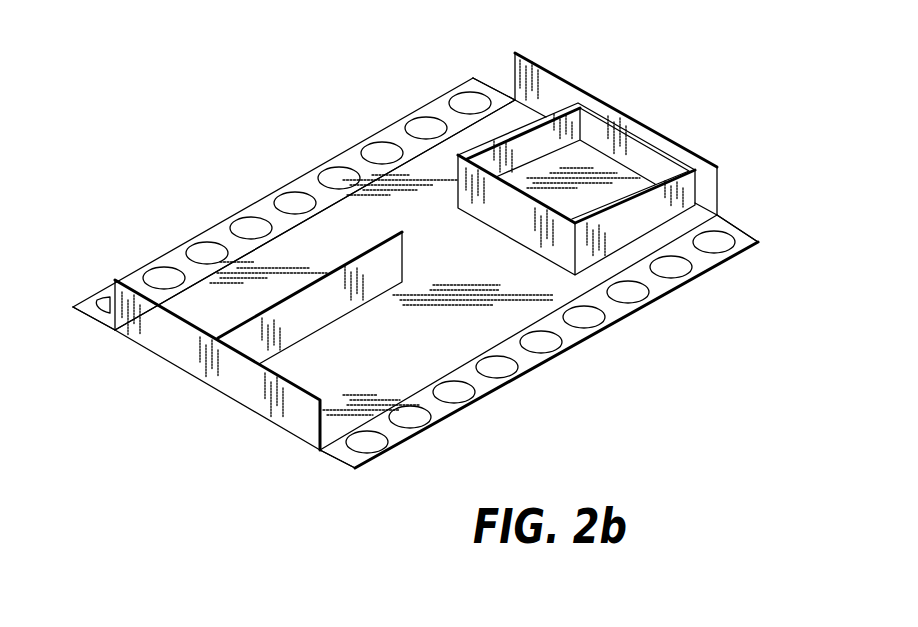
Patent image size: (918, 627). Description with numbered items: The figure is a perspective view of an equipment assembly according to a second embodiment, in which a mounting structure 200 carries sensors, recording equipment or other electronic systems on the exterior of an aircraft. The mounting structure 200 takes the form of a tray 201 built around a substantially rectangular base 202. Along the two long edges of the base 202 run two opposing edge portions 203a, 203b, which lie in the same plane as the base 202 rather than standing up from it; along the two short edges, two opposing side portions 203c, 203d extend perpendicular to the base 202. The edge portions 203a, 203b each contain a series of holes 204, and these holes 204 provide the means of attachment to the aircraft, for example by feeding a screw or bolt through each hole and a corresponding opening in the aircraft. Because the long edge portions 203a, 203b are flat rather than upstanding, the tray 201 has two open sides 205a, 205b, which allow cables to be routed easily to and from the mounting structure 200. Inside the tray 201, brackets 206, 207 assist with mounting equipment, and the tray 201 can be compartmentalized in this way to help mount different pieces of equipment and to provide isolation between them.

The mounting structure 200 is at (635, 71).
The tray 201 is at (260, 417).
The base 202 is at (468, 263).
The edge portion 203a is at (398, 122).
The edge portion 203b is at (500, 393).
The side portion 203c is at (185, 353).
The side portion 203d is at (668, 138).
The holes 204 is at (190, 248).
The open side 205a is at (305, 145).
The open side 205b is at (642, 337).
The bracket 206 is at (320, 313).
The bracket 207 is at (457, 193).